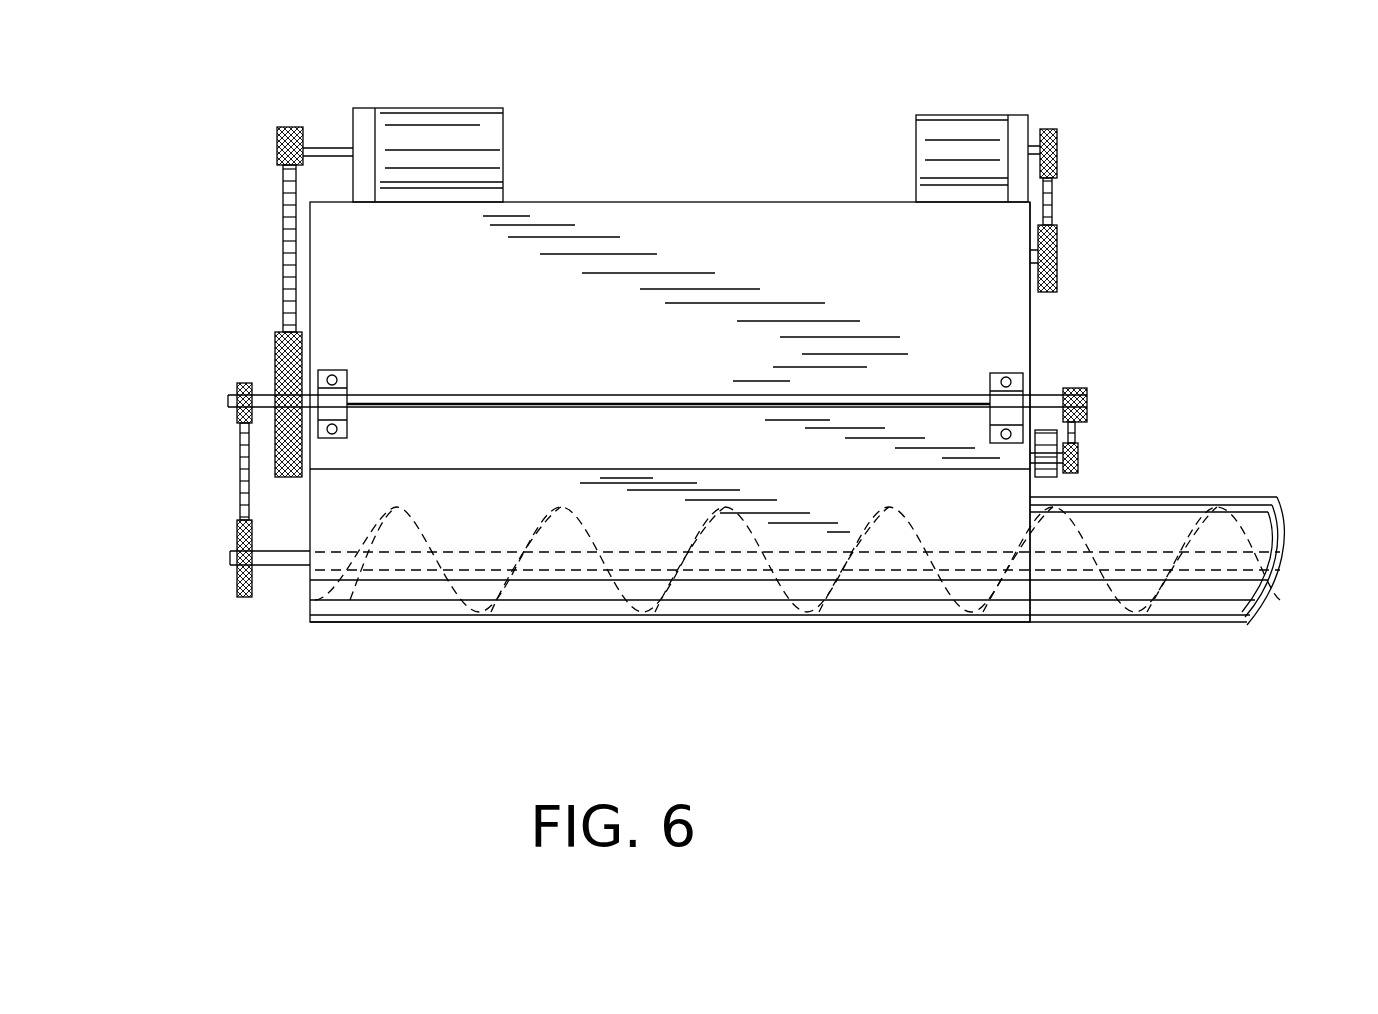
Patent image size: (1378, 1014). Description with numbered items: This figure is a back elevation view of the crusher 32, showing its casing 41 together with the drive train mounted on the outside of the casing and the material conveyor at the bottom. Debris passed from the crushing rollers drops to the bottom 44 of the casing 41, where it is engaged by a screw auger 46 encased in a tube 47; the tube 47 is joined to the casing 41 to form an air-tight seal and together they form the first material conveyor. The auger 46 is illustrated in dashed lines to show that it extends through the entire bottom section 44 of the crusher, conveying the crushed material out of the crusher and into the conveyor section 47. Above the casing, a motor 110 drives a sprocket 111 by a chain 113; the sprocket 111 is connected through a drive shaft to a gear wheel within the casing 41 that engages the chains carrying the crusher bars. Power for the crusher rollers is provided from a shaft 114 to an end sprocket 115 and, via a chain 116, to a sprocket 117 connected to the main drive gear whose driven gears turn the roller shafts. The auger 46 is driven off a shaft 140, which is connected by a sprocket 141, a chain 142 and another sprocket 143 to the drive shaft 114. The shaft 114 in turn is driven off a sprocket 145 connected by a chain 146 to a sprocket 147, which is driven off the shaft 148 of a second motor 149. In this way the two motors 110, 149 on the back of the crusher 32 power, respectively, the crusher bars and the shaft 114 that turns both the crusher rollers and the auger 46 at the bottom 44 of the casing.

The crusher 32 is at (673, 197).
The casing 41 is at (1010, 337).
The bottom of the casing 44 is at (880, 620).
The screw auger 46 is at (640, 565).
The tube 47 is at (1185, 622).
The motor 110 is at (967, 128).
The sprocket 111 is at (1057, 258).
The chain 113 is at (1050, 197).
The shaft 114 is at (613, 395).
The end sprocket 115 is at (1080, 392).
The chain 116 is at (1078, 428).
The sprocket 117 is at (1080, 457).
The shaft 140 is at (277, 557).
The sprocket 141 is at (238, 582).
The chain 142 is at (240, 475).
The sprocket 143 is at (237, 412).
The sprocket 145 is at (275, 344).
The chain 146 is at (283, 232).
The sprocket 147 is at (275, 147).
The shaft of motor 148 is at (322, 147).
The motor 149 is at (430, 112).